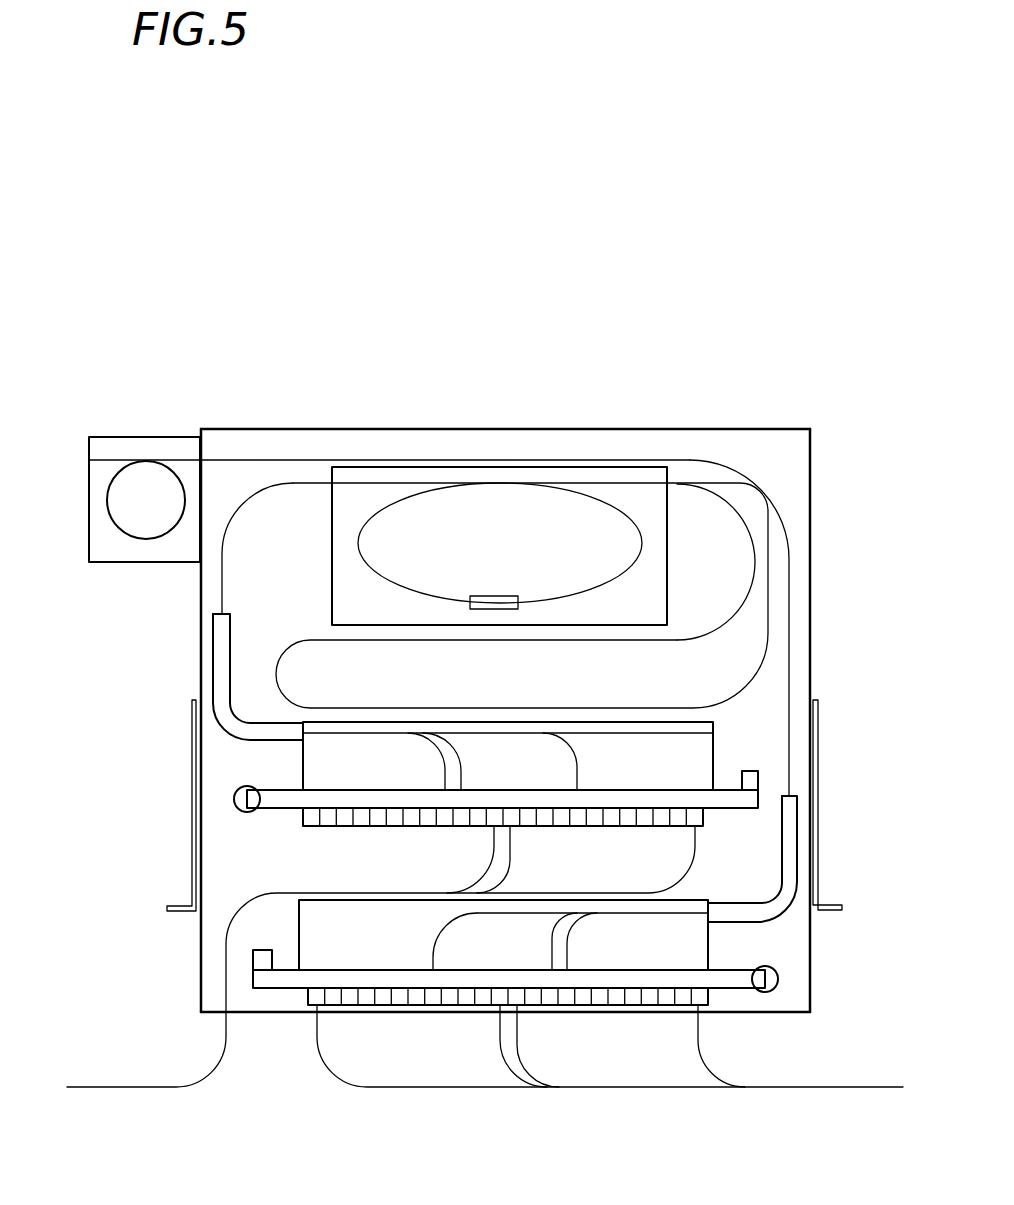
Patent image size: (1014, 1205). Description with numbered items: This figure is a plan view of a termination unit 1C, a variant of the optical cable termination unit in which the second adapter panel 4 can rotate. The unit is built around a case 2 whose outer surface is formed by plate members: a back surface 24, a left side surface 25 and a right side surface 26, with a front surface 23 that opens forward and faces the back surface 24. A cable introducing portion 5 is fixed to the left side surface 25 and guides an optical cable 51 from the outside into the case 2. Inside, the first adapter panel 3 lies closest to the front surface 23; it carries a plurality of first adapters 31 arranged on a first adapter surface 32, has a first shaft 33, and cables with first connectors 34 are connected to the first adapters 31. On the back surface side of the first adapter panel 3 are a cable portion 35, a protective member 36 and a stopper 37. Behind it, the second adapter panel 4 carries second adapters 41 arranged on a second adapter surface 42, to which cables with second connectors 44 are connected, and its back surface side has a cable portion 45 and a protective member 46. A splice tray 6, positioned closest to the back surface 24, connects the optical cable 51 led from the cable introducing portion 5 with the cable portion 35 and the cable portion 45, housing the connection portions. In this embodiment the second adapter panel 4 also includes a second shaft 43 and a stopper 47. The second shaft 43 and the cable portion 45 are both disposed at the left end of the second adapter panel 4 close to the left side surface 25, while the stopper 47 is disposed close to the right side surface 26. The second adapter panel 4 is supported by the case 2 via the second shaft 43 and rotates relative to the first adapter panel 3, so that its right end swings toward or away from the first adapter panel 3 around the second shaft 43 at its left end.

The termination unit 1C is at (797, 388).
The case 2 is at (664, 416).
The first adapter panel 3 is at (730, 949).
The second adapter panel 4 is at (266, 760).
The cable introducing portion 5 is at (89, 500).
The splice tray 6 is at (667, 560).
The front surface 23 is at (272, 1013).
The back surface 24 is at (480, 430).
The left side surface 25 is at (201, 643).
The right side surface 26 is at (811, 622).
The first adapters 31 is at (667, 1005).
The first adapter surface 32 is at (738, 988).
The first shaft 33 is at (766, 992).
The cables with first connectors 34 is at (571, 945).
The cable portion 35 is at (789, 725).
The protective member 36 is at (781, 860).
The stopper 37 is at (262, 950).
The second adapters 41 is at (341, 826).
The second adapter surface 42 is at (278, 808).
The second shaft 43 is at (243, 812).
The cables with second connectors 44 is at (580, 763).
The cable portion 45 is at (222, 565).
The protective member 46 is at (230, 668).
The stopper 47 is at (757, 771).
The optical cable 51 is at (290, 460).